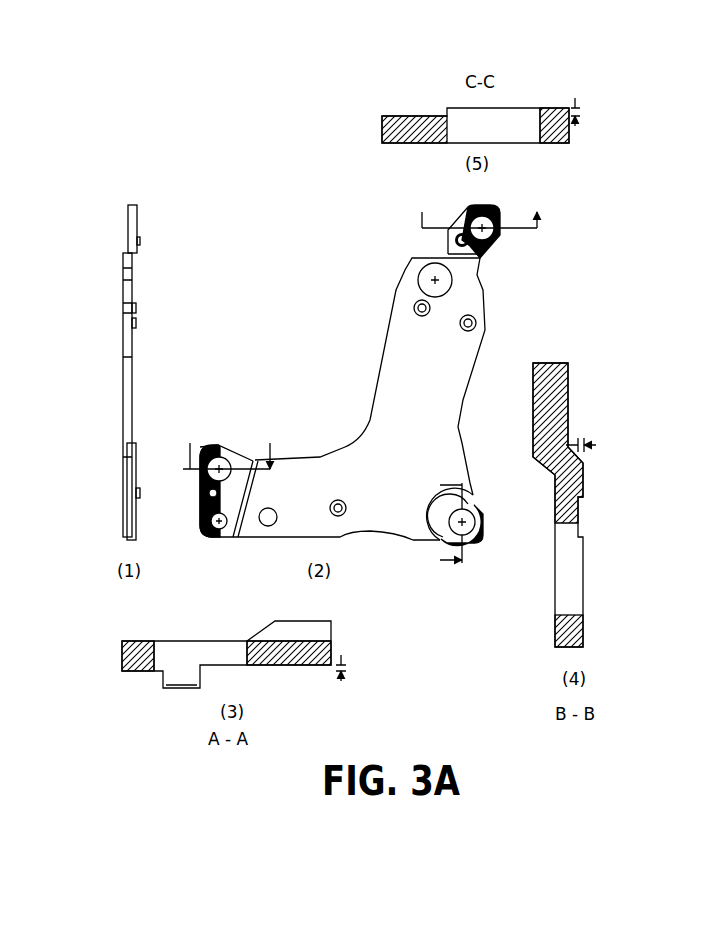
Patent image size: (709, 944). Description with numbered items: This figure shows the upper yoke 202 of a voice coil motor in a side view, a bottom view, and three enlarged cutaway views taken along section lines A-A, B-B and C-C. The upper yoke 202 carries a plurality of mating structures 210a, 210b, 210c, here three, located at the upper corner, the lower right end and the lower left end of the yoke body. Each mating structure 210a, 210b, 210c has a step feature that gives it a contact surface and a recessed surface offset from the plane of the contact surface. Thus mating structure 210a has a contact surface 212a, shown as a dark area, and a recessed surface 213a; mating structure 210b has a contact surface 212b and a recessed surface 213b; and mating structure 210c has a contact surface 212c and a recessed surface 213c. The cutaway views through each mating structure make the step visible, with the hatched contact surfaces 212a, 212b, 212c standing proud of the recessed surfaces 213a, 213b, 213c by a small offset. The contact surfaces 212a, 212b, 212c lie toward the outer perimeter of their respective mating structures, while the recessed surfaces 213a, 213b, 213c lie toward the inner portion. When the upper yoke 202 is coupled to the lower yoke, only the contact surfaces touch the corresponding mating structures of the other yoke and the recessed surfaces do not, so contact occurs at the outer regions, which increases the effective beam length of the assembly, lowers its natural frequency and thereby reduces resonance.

The upper yoke 202 is at (432, 412).
The mating structure 210a is at (137, 220).
The mating structure 210b is at (472, 503).
The mating structure 210c is at (238, 540).
The contact surface 212a is at (497, 206).
The contact surface 212b is at (481, 543).
The contact surface 212c is at (200, 490).
The recessed surface 213a is at (462, 225).
The recessed surface 213b is at (449, 508).
The recessed surface 213c is at (240, 486).